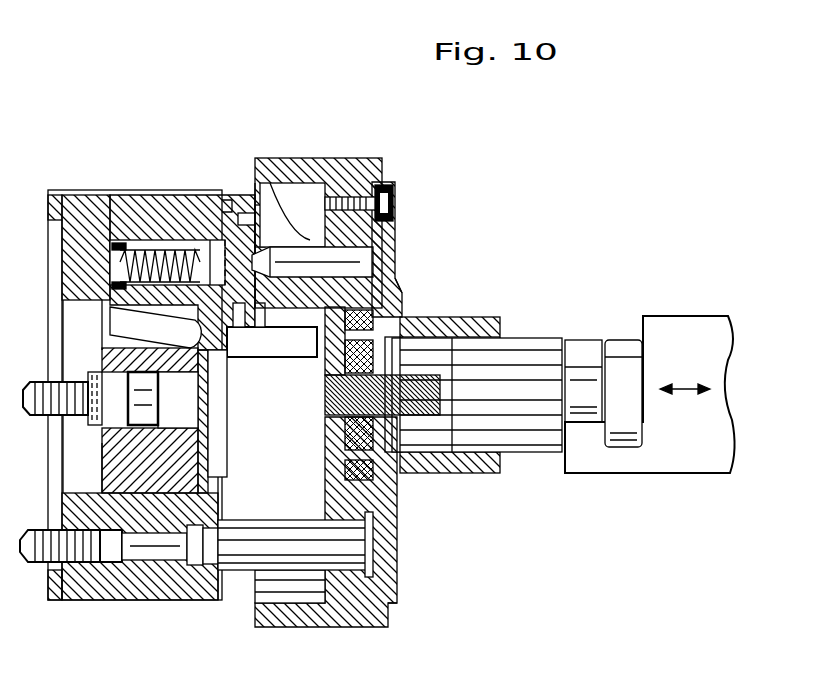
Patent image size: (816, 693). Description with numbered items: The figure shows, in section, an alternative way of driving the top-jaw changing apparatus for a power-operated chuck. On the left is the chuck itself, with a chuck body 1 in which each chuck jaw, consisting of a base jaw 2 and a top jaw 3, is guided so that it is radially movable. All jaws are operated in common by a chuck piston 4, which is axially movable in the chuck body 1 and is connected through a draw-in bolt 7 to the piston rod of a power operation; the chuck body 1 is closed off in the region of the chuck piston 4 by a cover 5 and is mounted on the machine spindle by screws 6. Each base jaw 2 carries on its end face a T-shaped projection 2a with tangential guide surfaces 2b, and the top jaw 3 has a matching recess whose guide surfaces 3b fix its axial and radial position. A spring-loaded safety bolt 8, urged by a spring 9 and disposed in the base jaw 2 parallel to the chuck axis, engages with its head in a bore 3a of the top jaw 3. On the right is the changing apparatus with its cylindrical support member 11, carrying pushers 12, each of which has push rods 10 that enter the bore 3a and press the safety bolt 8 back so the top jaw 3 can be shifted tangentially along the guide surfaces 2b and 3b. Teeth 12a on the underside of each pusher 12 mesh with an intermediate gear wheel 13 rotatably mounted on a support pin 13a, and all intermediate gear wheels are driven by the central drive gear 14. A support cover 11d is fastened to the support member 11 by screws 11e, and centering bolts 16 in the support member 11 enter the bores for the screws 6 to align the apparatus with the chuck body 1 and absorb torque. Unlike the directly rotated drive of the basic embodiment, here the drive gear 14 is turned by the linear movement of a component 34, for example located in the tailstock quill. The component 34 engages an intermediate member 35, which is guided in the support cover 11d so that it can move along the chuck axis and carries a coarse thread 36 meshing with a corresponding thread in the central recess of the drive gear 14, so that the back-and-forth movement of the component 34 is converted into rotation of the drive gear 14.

The chuck body 1 is at (140, 580).
The base jaw 2 is at (182, 205).
The T-shaped projection 2a is at (223, 203).
The guide surfaces 2b is at (253, 215).
The top jaw 3 is at (292, 242).
The bore 3a is at (372, 245).
The guide surfaces 3b is at (215, 207).
The chuck piston 4 is at (153, 483).
The cover 5 is at (217, 456).
The screws 6 is at (90, 547).
The draw-in bolt 7 is at (160, 412).
The safety bolt 8 is at (218, 267).
The spring 9 is at (122, 247).
The push rod 10 is at (352, 265).
The cylindrical support member 11 is at (352, 605).
The support cover 11d is at (390, 590).
The screws 11e is at (395, 198).
The pusher 12 is at (395, 223).
The teeth 12a is at (402, 312).
The intermediate gear wheel 13 is at (368, 500).
The support pin 13a is at (410, 317).
The central drive gear 14 is at (373, 430).
The centering bolts 16 is at (260, 545).
The component 34 is at (660, 450).
The intermediate member 35 is at (537, 428).
The coarse thread 36 is at (423, 415).